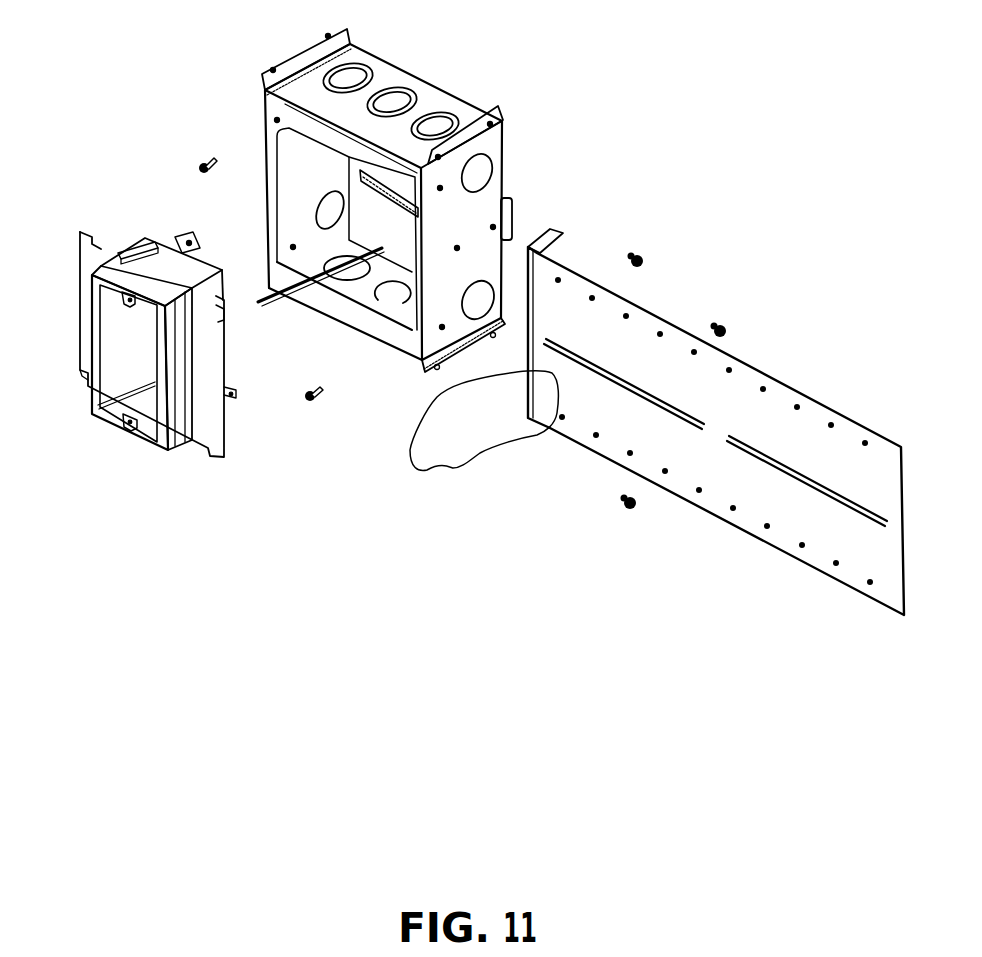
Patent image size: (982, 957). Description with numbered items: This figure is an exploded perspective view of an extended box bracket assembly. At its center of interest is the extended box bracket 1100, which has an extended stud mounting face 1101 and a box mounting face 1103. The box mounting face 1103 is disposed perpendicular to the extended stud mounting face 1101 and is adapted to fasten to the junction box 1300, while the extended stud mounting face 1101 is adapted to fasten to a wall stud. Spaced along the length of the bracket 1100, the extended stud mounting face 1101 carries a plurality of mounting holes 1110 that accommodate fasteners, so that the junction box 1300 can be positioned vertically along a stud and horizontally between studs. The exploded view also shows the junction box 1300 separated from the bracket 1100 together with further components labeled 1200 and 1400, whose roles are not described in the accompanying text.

The extended box bracket 1100 is at (792, 386).
The extended stud mounting face 1101 is at (547, 392).
The box mounting face 1103 is at (560, 231).
The mounting holes 1110 is at (803, 546).
The electrical box assembly 1200 is at (113, 246).
The junction box 1300 is at (365, 57).
The grounding tab 1400 is at (505, 200).